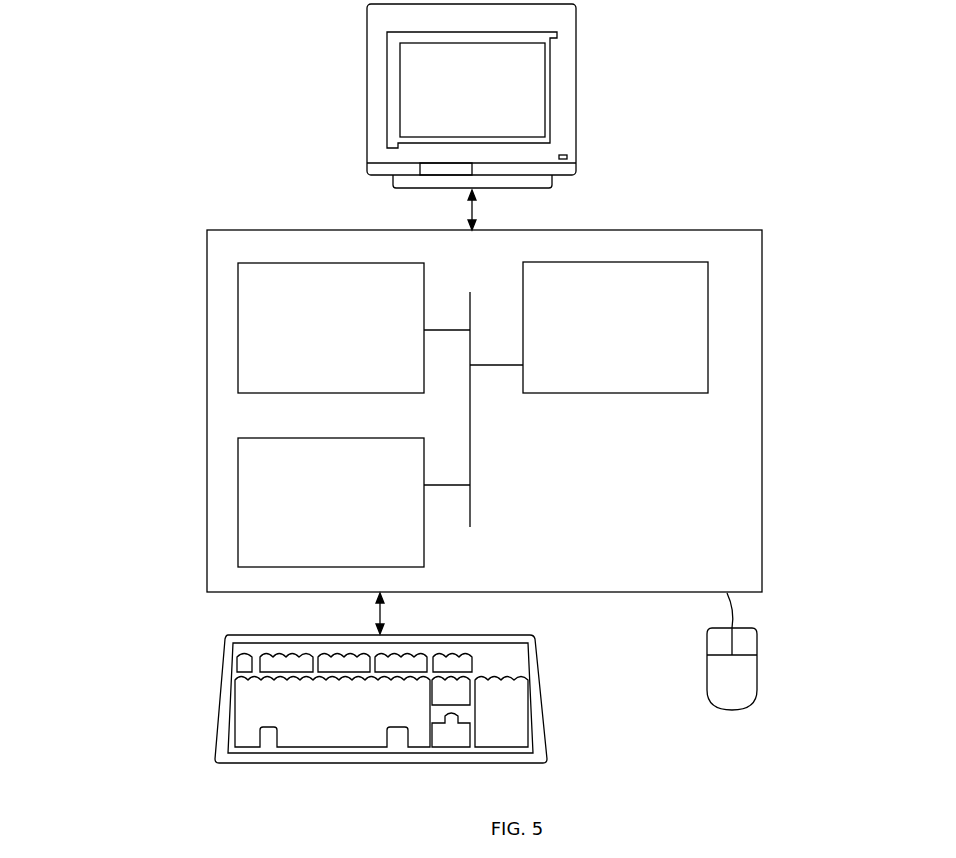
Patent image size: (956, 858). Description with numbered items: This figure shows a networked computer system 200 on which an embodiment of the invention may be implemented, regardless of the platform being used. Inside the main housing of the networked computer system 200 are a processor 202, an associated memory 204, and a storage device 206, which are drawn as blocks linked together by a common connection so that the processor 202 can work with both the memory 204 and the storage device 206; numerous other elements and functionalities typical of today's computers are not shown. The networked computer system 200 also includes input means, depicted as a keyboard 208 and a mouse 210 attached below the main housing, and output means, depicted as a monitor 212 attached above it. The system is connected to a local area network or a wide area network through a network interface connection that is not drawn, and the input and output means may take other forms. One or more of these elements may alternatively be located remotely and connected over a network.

The networked computer system 200 is at (258, 82).
The processor 202 is at (598, 346).
The memory 204 is at (305, 355).
The storage device 206 is at (313, 536).
The keyboard 208 is at (227, 635).
The mouse 210 is at (757, 652).
The monitor 212 is at (576, 97).